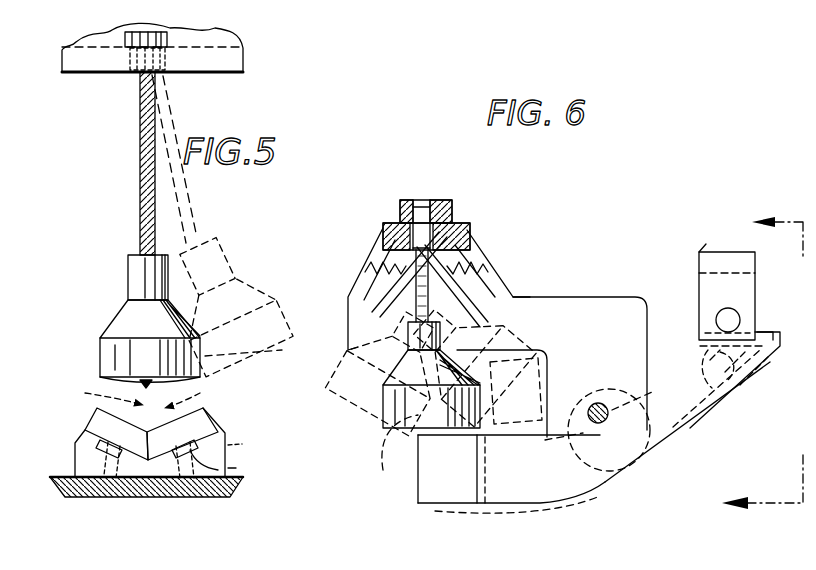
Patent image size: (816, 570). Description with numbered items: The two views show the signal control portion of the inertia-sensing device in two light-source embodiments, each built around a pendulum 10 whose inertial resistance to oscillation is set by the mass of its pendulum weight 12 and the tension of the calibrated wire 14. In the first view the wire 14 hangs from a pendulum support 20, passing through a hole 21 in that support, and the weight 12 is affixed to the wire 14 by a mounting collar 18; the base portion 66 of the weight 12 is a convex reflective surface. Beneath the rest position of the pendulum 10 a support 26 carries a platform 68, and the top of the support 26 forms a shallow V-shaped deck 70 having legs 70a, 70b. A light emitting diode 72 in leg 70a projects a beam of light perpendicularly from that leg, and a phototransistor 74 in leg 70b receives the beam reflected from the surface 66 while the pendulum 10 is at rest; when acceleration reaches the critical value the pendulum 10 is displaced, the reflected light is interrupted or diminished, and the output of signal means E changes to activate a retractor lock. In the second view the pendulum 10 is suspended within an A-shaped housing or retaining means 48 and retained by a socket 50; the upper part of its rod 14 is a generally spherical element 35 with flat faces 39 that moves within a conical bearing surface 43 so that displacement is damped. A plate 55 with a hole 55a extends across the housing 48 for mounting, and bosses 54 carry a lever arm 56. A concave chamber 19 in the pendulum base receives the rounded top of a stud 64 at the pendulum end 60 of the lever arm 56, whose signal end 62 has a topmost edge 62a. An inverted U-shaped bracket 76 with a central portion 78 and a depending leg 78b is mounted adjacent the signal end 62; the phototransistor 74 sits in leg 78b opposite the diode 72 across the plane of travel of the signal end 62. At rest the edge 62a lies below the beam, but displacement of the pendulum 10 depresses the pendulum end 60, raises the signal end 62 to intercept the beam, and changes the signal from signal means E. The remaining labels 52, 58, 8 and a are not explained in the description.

In FIG. 5, the pendulum 10 is at (95, 202).
In FIG. 6, the pendulum 10 is at (375, 366).
In FIG. 5, the pendulum weight 12 is at (124, 310).
In FIG. 6, the pendulum weight 12 is at (495, 346).
In FIG. 5, the calibrated spring wire 14 is at (140, 113).
In FIG. 6, the calibrated spring wire 14 is at (402, 256).
In FIG. 5, the mounting collar 18 is at (128, 271).
In FIG. 6, the mounting collar 18 is at (404, 318).
In FIG. 6, the concave chamber 19 is at (478, 400).
In FIG. 5, the pendulum support 20 is at (220, 46).
In FIG. 5, the hole 21 is at (172, 70).
In FIG. 5, the support 26 is at (230, 492).
In FIG. 5, the pivot direction arrows 8 is at (140, 395).
In FIG. 6, the generally spherical element 35 is at (455, 235).
In FIG. 6, the flat faces 39 is at (418, 216).
In FIG. 6, the conical shaped bearing surface 43 is at (465, 250).
In FIG. 6, the A-shaped housing 48 is at (378, 266).
In FIG. 6, the socket 50 is at (445, 205).
In FIG. 6, the mounting plate 52 is at (588, 300).
In FIG. 6, the boss 54 is at (628, 362).
In FIG. 6, the plate 55 is at (462, 322).
In FIG. 6, the hole 55a is at (448, 302).
In FIG. 6, the lever arm 56 is at (605, 484).
In FIG. 6, the pivot pin 58 is at (609, 430).
In FIG. 6, the pendulum end 60 is at (437, 481).
In FIG. 6, the signal end 62 is at (750, 388).
In FIG. 6, the topmost edge 62a is at (764, 316).
In FIG. 6, the stud 64 is at (394, 451).
In FIG. 5, the base portion 66 is at (200, 350).
In FIG. 5, the platform 68 is at (250, 442).
In FIG. 5, the shallow V-shaped deck 70 is at (158, 470).
In FIG. 5, the leg 70a is at (80, 435).
In FIG. 5, the leg 70b is at (205, 410).
In FIG. 5, the light emitting diode 72 is at (110, 462).
In FIG. 5, the phototransistor 74 is at (244, 436).
In FIG. 6, the phototransistor 74 is at (711, 370).
In FIG. 6, the inverted U-shaped bracket 76 is at (701, 250).
In FIG. 6, the central portion 78 is at (738, 252).
In FIG. 6, the depending leg 78b is at (699, 273).
In FIG. 5, the signal means E is at (230, 468).
In FIG. 6, the section line a- a is at (762, 350).